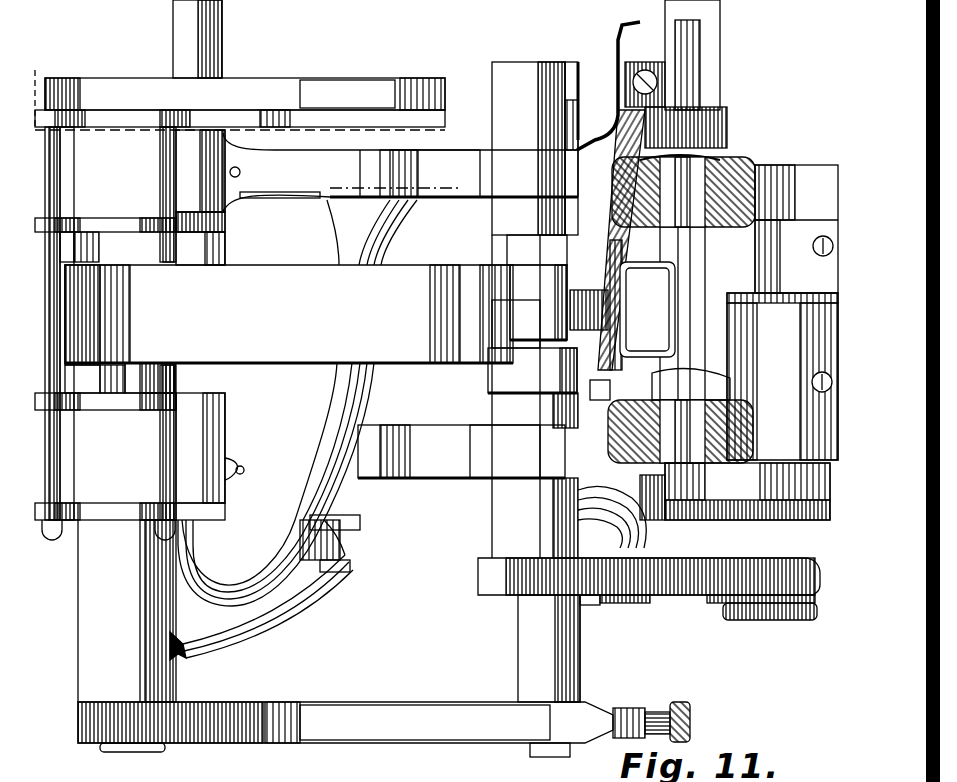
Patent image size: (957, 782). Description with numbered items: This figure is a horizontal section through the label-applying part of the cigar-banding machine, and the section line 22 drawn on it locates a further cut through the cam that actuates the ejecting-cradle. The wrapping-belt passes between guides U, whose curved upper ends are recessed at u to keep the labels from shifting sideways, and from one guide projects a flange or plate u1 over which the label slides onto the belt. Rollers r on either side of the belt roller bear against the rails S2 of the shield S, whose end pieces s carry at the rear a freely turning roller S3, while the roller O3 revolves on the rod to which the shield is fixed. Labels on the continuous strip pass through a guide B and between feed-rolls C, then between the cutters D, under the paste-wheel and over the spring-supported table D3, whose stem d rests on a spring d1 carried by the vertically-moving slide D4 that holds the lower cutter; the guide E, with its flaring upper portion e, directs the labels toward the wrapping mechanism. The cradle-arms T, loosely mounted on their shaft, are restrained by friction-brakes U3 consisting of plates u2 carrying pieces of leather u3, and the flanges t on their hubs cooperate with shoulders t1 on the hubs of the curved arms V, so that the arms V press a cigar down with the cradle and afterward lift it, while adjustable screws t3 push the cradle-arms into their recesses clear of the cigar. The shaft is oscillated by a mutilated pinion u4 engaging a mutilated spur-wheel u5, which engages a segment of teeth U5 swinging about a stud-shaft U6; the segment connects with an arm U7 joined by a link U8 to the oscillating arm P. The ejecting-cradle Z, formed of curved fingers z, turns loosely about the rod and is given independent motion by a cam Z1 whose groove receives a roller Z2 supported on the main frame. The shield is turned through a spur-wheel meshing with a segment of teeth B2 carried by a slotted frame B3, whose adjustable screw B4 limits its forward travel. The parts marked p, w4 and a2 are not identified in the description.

The section line 22 is at (474, 136).
The truck or roller Z2 is at (228, 80).
The cam Z1 is at (347, 79).
The ejecting-cradle Z is at (137, 503).
The curved fingers z is at (130, 410).
The shield S is at (93, 355).
The end pieces s is at (105, 366).
The rails S2 is at (80, 240).
The roller S3 is at (90, 250).
The roller O3 is at (130, 362).
The adjustable screws t3 is at (238, 180).
The shoulders t1 is at (492, 158).
The flanges t is at (69, 769).
The oscillating arm P is at (293, 441).
The arm web p is at (278, 600).
The cradle-arms T is at (425, 468).
The curved arms V is at (520, 470).
The web w4 is at (280, 214).
The pieces of leather u3 is at (535, 310).
The plates u2 is at (585, 90).
The friction-brakes U3 is at (585, 136).
The stem d is at (548, 290).
The spring d1 is at (553, 233).
The rollers r is at (492, 250).
The guides U is at (510, 270).
The recesses u is at (515, 282).
The flange or plate u1 is at (512, 305).
The spring-supported table D3 is at (575, 312).
The post bracket a2 is at (665, 95).
The guide B is at (755, 270).
The feed-rolls C is at (782, 376).
The upper portion e is at (642, 305).
The guide E is at (691, 368).
The cutters D is at (612, 410).
The vertically-moving slide D4 is at (612, 380).
The arm U7 is at (721, 491).
The link U8 is at (473, 529).
The segment of teeth U5 is at (712, 600).
The stud-shaft U6 is at (790, 620).
The mutilated spur-wheel u5 is at (640, 605).
The mutilated pinion u4 is at (510, 596).
The segment of teeth B2 is at (203, 745).
The slotted frame B3 is at (308, 745).
The adjustable screw B4 is at (660, 712).